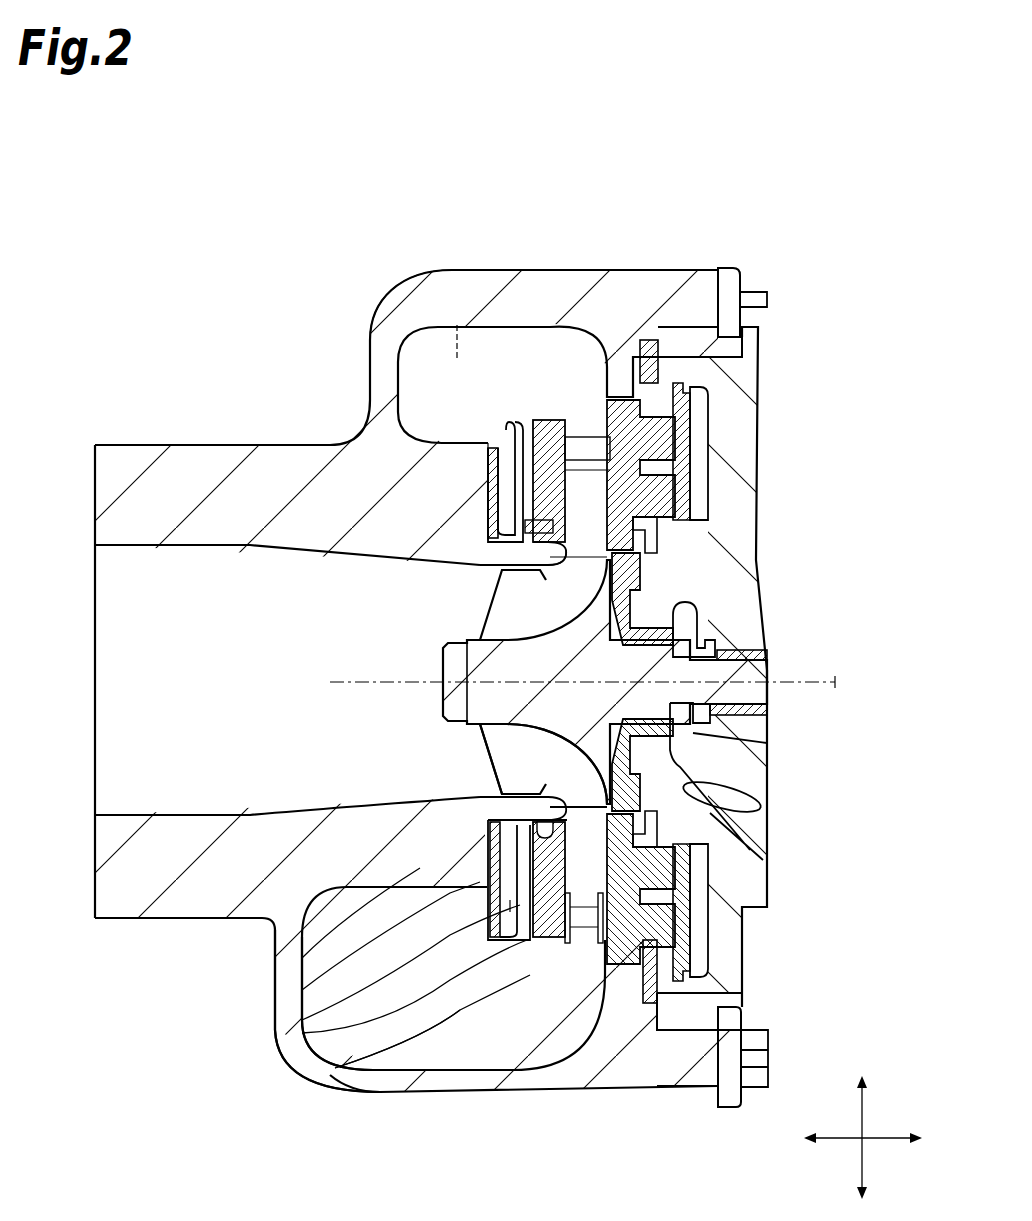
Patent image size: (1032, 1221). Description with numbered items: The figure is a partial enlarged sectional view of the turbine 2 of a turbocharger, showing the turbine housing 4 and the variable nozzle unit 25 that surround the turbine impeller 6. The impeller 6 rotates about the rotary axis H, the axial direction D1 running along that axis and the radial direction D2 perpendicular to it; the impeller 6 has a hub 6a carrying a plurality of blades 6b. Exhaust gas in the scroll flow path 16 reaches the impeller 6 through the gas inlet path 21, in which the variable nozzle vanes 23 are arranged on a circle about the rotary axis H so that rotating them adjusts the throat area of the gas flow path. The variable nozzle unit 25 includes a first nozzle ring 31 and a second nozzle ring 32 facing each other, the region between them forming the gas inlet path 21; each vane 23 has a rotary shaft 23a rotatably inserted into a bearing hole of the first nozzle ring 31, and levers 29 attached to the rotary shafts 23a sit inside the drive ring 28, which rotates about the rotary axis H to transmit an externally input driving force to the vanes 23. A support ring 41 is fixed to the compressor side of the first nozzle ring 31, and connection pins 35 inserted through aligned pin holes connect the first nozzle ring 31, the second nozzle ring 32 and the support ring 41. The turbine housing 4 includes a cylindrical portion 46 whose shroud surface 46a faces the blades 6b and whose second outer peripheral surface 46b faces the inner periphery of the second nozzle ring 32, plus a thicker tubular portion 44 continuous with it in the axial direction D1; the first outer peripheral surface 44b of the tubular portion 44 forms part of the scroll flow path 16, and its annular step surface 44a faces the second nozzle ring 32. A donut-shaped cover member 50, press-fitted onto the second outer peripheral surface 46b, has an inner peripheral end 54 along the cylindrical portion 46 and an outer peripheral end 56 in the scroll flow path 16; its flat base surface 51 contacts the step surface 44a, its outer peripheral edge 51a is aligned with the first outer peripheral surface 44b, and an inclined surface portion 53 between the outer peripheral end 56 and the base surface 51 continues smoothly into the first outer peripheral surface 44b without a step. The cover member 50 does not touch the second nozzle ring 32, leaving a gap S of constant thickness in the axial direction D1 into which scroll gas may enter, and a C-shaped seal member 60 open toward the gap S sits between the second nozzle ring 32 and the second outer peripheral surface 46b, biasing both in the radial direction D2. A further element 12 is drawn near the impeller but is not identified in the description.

The turbine 2 is at (354, 278).
The turbine housing 4 is at (382, 400).
The turbine impeller 6 is at (430, 670).
The hub 6a is at (498, 724).
The blades 6b is at (520, 752).
The shaft end 12 is at (430, 702).
The scroll flow path 16 is at (457, 325).
The gas inlet path 21 is at (615, 445).
The variable nozzle vanes 23 is at (525, 528).
The rotary shaft 23a is at (655, 487).
The variable nozzle unit 25 is at (510, 416).
The drive ring 28 is at (693, 430).
The levers 29 is at (745, 327).
The first nozzle ring 31 is at (648, 490).
The second nozzle ring 32 is at (585, 415).
The connection pins 35 is at (550, 940).
The support ring 41 is at (682, 378).
The tubular portion 44 is at (313, 540).
The step surface 44a is at (495, 412).
The first outer peripheral surface 44b is at (457, 440).
The cylindrical portion 46 is at (548, 800).
The shroud surface 46a is at (560, 548).
The second outer peripheral surface 46b is at (567, 530).
The cover member 50 is at (478, 508).
The base surface 51 is at (313, 1023).
The outer peripheral edge 51a is at (358, 1062).
The inclined surface portion 53 is at (380, 1090).
The inner peripheral end 54 is at (320, 950).
The outer peripheral end 56 is at (457, 1032).
The seal member 60 is at (320, 990).
The gap S is at (512, 945).
The rotary axis H is at (830, 690).
The axial direction D1 is at (872, 1156).
The radial direction D2 is at (886, 1132).